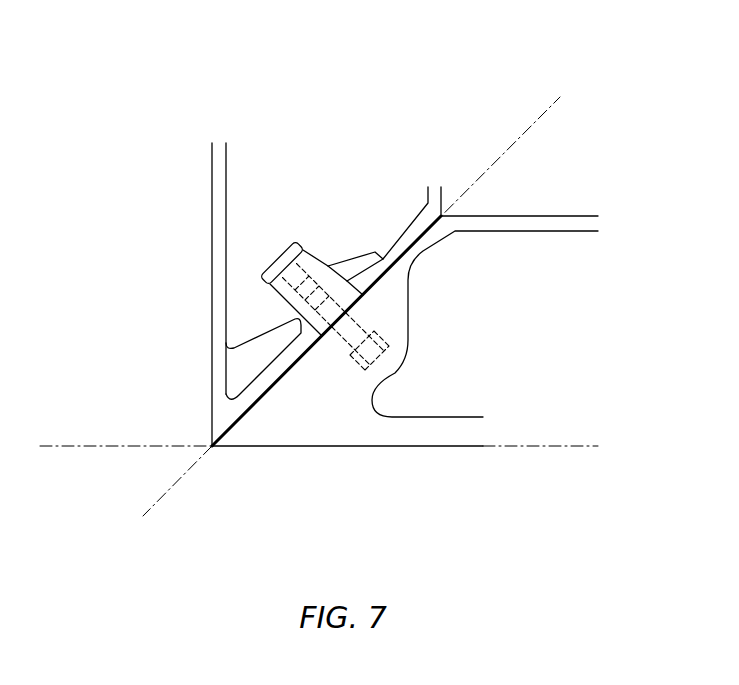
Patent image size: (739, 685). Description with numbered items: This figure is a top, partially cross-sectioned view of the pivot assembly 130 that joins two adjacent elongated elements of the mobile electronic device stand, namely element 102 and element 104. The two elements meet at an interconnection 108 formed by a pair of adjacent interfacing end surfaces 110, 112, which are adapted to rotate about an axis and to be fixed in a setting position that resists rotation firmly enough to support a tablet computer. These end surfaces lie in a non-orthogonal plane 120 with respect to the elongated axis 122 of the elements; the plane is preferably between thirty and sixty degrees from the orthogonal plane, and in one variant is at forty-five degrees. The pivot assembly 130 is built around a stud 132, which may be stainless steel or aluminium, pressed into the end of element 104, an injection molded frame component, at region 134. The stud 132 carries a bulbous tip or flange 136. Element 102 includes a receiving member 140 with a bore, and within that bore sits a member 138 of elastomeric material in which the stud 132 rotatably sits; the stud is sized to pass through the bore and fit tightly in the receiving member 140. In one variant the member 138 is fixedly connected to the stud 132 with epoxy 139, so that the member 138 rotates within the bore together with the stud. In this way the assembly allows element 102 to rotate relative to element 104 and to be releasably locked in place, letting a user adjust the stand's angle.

The element 102 is at (210, 292).
The element 104 is at (412, 447).
The interconnection 108 is at (200, 446).
The interfacing end surface 110 is at (212, 353).
The interfacing end surface 112 is at (213, 354).
The non-orthogonal plane 120 is at (518, 139).
The elongated axis 122 is at (565, 446).
The pivot assembly 130 is at (327, 86).
The stud 132 is at (348, 321).
The region 134 is at (400, 372).
The bulbous tip or flange 136 is at (273, 256).
The member 138 is at (284, 255).
The epoxy 139 is at (312, 272).
The receiving member 140 is at (340, 251).